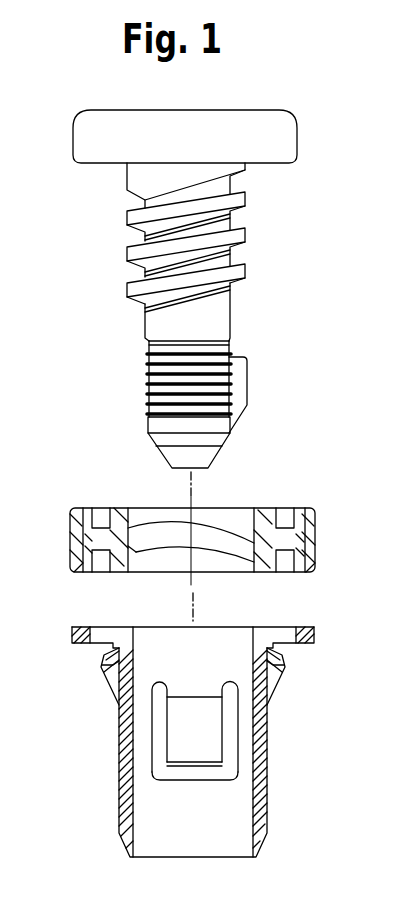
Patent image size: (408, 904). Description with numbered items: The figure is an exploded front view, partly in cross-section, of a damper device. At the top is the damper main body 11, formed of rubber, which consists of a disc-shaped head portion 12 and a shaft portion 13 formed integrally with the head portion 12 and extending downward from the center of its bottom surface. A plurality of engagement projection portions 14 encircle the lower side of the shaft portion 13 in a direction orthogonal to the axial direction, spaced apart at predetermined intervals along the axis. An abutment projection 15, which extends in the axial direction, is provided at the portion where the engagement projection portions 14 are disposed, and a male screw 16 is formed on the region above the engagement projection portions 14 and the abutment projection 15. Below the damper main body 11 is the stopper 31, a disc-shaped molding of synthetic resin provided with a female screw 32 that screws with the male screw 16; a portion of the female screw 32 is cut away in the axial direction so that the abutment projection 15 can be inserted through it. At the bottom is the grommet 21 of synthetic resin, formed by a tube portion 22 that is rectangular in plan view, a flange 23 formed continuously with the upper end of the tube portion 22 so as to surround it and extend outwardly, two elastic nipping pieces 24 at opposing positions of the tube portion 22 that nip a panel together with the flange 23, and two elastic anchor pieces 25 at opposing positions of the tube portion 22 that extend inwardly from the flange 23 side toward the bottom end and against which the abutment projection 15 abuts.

The damper main body 11 is at (108, 232).
The head portion 12 is at (285, 143).
The shaft portion 13 is at (215, 318).
The engagement projection portions 14 is at (149, 391).
The abutment projection 15 is at (238, 392).
The male screw 16 is at (240, 198).
The grommet 21 is at (108, 782).
The tube portion 22 is at (268, 753).
The flange 23 is at (307, 632).
The elastic nipping pieces 24 is at (102, 661).
The elastic anchor pieces 25 is at (208, 733).
The stopper 31 is at (310, 535).
The female screw 32 is at (215, 537).